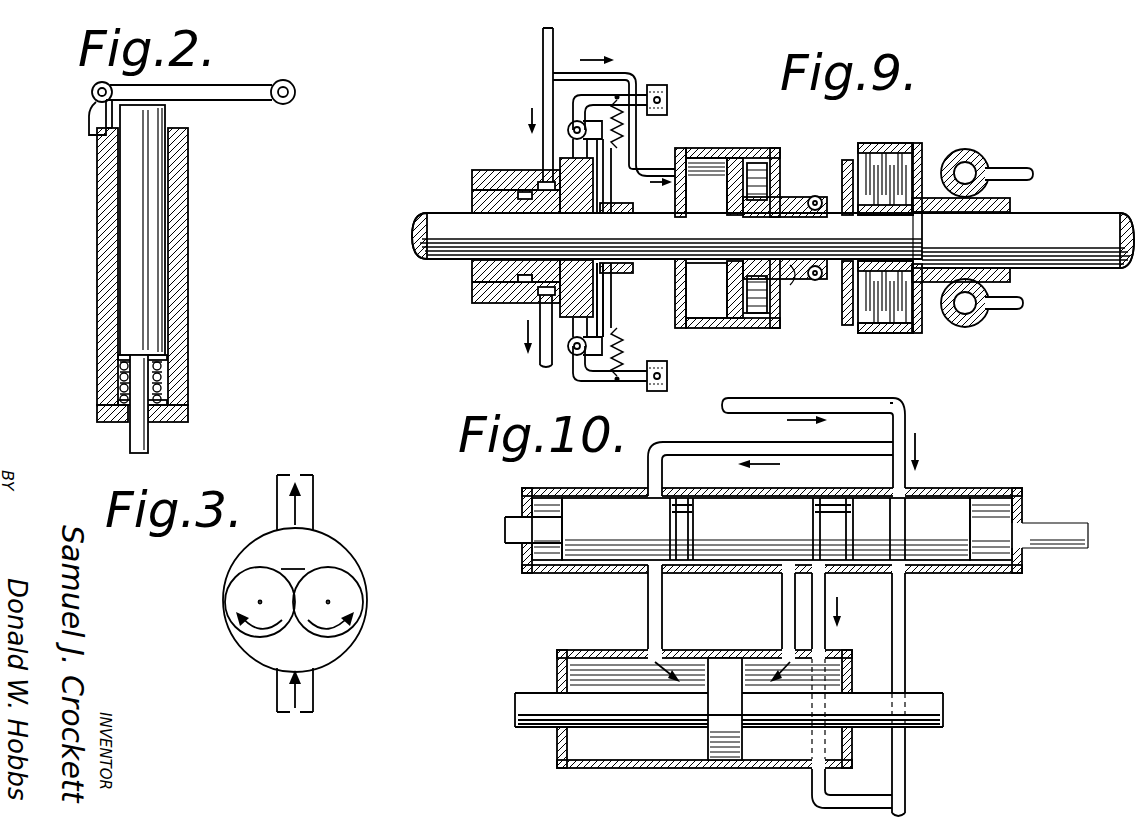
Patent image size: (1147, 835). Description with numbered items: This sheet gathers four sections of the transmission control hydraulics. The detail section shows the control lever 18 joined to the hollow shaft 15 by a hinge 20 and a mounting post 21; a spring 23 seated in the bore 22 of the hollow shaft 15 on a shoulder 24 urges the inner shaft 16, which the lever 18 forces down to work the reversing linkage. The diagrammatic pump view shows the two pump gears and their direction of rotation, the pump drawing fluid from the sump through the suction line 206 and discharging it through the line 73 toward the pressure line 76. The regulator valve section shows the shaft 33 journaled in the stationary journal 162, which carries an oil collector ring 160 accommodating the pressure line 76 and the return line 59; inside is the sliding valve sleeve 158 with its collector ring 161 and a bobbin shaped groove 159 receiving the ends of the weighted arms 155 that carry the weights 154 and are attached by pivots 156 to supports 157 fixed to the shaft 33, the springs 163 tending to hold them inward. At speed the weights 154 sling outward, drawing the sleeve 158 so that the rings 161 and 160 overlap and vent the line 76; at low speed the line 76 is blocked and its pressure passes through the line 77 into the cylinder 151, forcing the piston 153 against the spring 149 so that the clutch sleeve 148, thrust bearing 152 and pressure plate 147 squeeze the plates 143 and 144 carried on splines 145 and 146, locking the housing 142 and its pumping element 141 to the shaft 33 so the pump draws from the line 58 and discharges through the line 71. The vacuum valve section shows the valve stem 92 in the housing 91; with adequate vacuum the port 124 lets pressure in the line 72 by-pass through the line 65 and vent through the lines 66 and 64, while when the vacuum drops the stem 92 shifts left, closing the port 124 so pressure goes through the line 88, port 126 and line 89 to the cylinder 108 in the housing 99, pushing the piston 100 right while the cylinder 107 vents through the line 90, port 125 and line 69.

In FIG. 2, the hollow shaft 15 is at (180, 232).
In FIG. 2, the shaft 16 is at (150, 440).
In FIG. 2, the lever 18 is at (222, 86).
In FIG. 2, the hinge 20 is at (93, 92).
In FIG. 2, the mounting post 21 is at (100, 112).
In FIG. 2, the bore 22 is at (172, 318).
In FIG. 2, the spring 23 is at (160, 386).
In FIG. 2, the shoulder 24 is at (128, 406).
In FIG. 3, the discharge line 73 is at (318, 500).
In FIG. 3, the suction line 206 is at (282, 676).
In FIG. 9, the shaft 33 is at (442, 228).
In FIG. 9, the line 58 is at (990, 312).
In FIG. 9, the return line 59 is at (540, 355).
In FIG. 9, the line 71 is at (1024, 170).
In FIG. 9, the pressure line 76 is at (545, 80).
In FIG. 9, the line 77 is at (655, 165).
In FIG. 9, the pumping element 141 is at (985, 162).
In FIG. 9, the housing 142 is at (880, 145).
In FIG. 9, the clutch plate 143 is at (926, 150).
In FIG. 9, the clutch plate 144 is at (927, 178).
In FIG. 9, the splines 145 is at (900, 333).
In FIG. 9, the splines 146 is at (906, 212).
In FIG. 9, the pressure plate 147 is at (850, 322).
In FIG. 9, the clutch sleeve 148 is at (792, 280).
In FIG. 9, the spring 149 is at (772, 312).
In FIG. 9, the cylinder 151 is at (772, 152).
In FIG. 9, the thrust bearing 152 is at (815, 195).
In FIG. 9, the piston 153 is at (700, 197).
In FIG. 9, the weights 154 is at (662, 86).
In FIG. 9, the weighted arms 155 is at (612, 90).
In FIG. 9, the pivots 156 is at (570, 128).
In FIG. 9, the supports 157 is at (614, 176).
In FIG. 9, the sliding valve sleeve 158 is at (486, 263).
In FIG. 9, the groove 159 is at (605, 306).
In FIG. 9, the oil collector ring 160 is at (538, 292).
In FIG. 9, the collector ring 161 is at (472, 292).
In FIG. 9, the stationary journal 162 is at (500, 176).
In FIG. 9, the springs 163 is at (622, 118).
In FIG. 10, the line 64 is at (907, 810).
In FIG. 10, the line 65 is at (906, 664).
In FIG. 10, the line 66 is at (906, 752).
In FIG. 10, the line 69 is at (830, 642).
In FIG. 10, the line 72 is at (765, 406).
In FIG. 10, the line 88 is at (740, 447).
In FIG. 10, the line 89 is at (648, 610).
In FIG. 10, the line 90 is at (786, 604).
In FIG. 10, the housing 91 is at (977, 490).
In FIG. 10, the valve stem 92 is at (1050, 522).
In FIG. 10, the housing 99 is at (710, 765).
In FIG. 10, the piston 100 is at (722, 720).
In FIG. 10, the cylinder 107 is at (780, 733).
In FIG. 10, the cylinder 108 is at (622, 765).
In FIG. 10, the port 124 is at (896, 492).
In FIG. 10, the port 125 is at (830, 488).
In FIG. 10, the port 126 is at (689, 573).